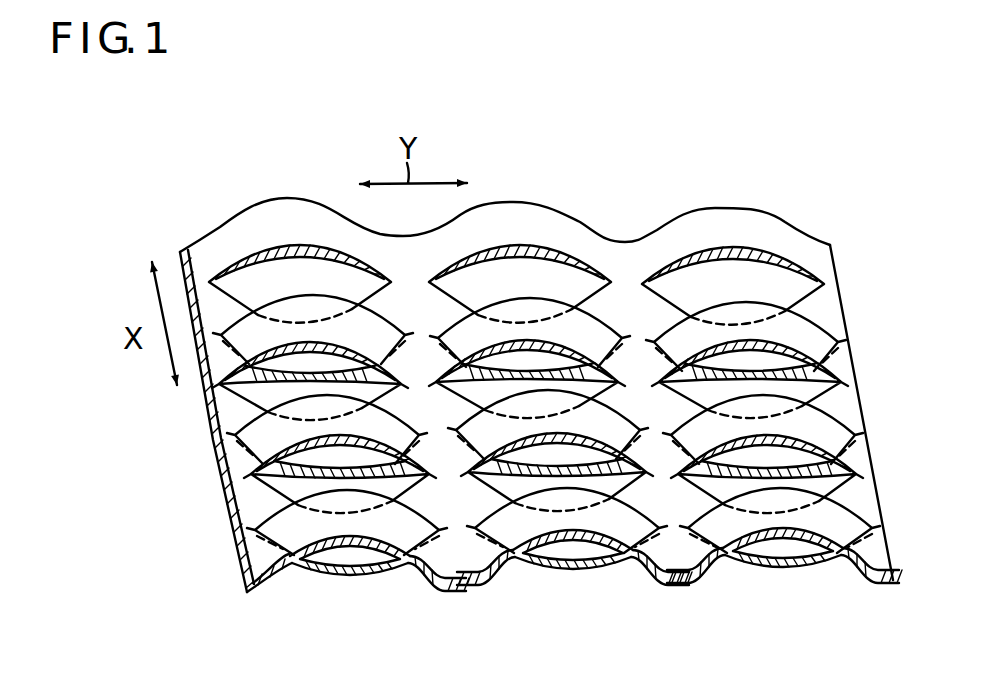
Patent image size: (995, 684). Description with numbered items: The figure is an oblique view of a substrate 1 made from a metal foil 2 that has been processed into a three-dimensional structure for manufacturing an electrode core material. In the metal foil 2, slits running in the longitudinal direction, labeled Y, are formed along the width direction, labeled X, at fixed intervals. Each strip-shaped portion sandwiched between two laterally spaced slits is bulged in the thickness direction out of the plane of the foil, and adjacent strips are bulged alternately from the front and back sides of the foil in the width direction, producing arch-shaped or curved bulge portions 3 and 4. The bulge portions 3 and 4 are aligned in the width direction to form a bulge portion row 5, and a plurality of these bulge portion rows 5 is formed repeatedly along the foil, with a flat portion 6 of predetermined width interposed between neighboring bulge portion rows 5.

The substrate 1 is at (545, 391).
The metal foil 2 is at (823, 305).
The bulge portion 3 is at (285, 228).
The bulge portion 4 is at (290, 388).
The bulge portion row 5 is at (268, 198).
The flat portion 6 is at (457, 497).